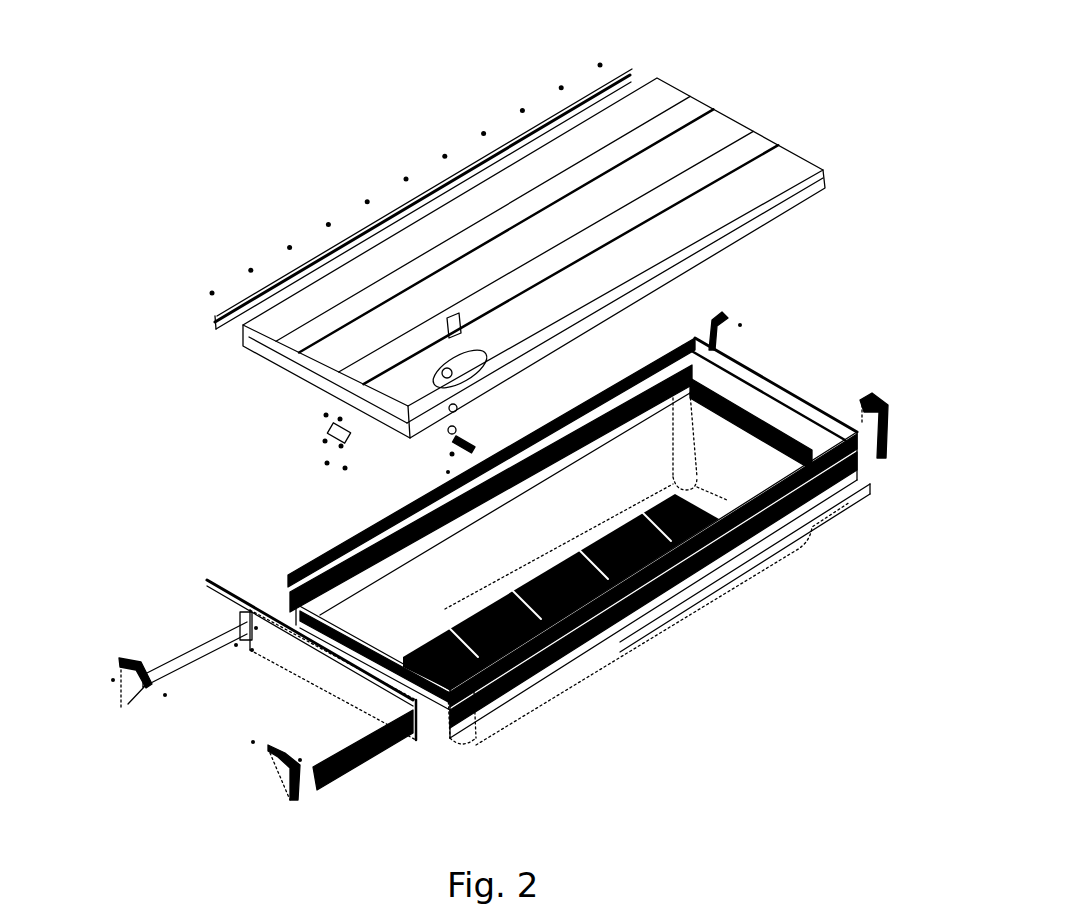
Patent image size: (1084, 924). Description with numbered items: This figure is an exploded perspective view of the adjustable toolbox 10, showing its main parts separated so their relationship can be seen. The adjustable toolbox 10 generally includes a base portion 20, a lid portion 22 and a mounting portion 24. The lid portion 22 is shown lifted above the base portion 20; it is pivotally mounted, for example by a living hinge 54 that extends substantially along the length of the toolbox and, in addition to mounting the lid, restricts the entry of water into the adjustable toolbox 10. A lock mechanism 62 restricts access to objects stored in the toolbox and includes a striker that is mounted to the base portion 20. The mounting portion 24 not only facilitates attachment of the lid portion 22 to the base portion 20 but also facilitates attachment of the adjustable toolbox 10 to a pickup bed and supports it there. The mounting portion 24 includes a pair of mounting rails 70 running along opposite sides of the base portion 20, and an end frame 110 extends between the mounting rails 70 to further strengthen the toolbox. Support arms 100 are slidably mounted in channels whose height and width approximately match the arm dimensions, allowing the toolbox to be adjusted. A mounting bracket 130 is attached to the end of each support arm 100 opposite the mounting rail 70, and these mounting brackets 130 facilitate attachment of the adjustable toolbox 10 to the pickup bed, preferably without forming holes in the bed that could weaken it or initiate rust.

The adjustable toolbox 10 is at (255, 68).
The base portion 20 is at (591, 656).
The lid portion 22 is at (710, 137).
The mounting portion 24 is at (723, 541).
The living hinge 54 is at (398, 213).
The lock mechanism 62 is at (459, 320).
The mounting rail 70 is at (637, 590).
The support arm 100 is at (837, 467).
The end frame 110 is at (330, 683).
The mounting bracket 130 is at (726, 330).